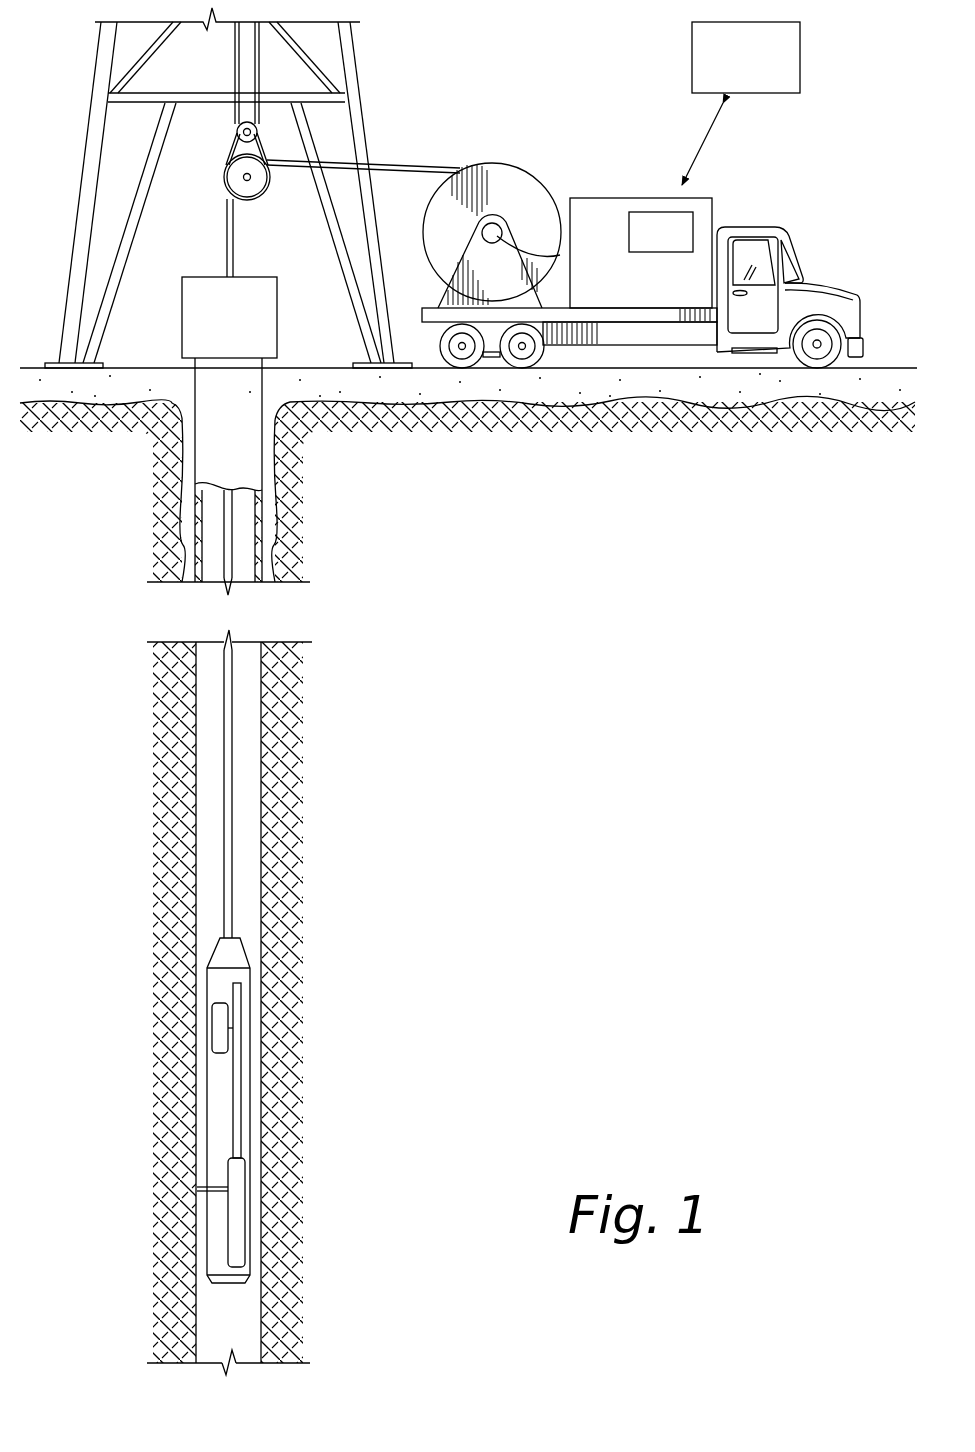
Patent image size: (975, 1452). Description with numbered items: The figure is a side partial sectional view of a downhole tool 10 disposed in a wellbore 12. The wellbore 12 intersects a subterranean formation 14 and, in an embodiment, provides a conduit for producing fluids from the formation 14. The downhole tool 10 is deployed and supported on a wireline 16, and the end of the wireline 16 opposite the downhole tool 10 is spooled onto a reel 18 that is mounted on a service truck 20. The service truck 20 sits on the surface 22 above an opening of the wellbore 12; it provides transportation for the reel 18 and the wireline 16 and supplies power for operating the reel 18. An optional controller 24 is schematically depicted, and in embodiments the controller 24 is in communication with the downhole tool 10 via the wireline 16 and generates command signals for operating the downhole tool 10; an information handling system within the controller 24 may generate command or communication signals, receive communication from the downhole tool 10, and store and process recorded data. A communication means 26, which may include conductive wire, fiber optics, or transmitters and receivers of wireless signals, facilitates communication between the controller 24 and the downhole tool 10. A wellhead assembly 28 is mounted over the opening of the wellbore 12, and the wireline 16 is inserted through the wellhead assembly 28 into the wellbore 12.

The downhole tool 10 is at (250, 1099).
The wellbore 12 is at (256, 842).
The subterranean formation 14 is at (506, 958).
The wireline 16 is at (232, 737).
The reel 18 is at (495, 163).
The service truck 20 is at (805, 219).
The surface 22 is at (887, 368).
The controller 24 is at (759, 70).
The communication means 26 is at (675, 245).
The wellhead assembly 28 is at (198, 275).